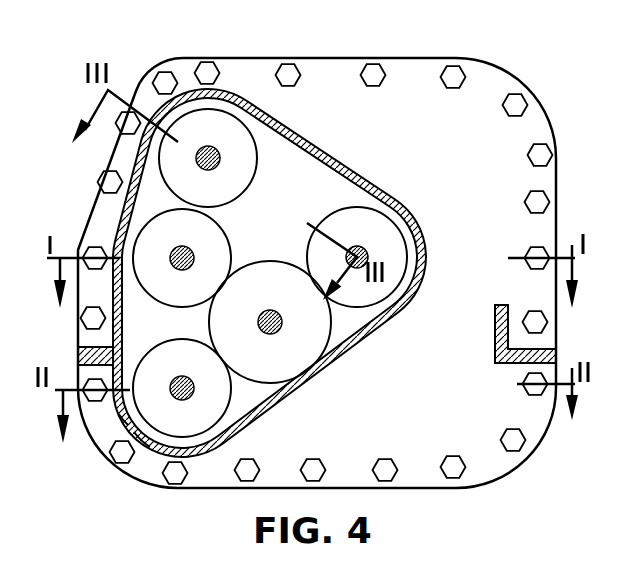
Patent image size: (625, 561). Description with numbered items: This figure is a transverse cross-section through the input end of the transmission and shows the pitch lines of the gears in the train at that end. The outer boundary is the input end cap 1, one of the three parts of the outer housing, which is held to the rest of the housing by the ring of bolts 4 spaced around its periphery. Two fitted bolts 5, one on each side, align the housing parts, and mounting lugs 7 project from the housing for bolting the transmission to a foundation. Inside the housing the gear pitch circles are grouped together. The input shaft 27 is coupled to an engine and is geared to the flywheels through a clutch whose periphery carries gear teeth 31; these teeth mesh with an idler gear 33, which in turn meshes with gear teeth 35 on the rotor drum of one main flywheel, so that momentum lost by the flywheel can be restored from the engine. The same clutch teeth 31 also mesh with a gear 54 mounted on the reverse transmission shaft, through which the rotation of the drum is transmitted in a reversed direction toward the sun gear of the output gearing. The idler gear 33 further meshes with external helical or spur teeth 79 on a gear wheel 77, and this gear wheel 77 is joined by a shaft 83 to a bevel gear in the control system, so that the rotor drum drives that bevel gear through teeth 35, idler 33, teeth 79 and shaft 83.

The input end cap 1 is at (208, 57).
The bolts 4 is at (447, 458).
The fitted bolts 5 is at (90, 250).
The mounting lugs 7 is at (78, 352).
The input shaft 27 is at (194, 251).
The gear teeth on clutch 29 31 is at (118, 288).
The idler gear 33 is at (330, 348).
The gear teeth on rotor drum 23 35 is at (365, 208).
The gear meshing with gear teeth 31 54 is at (254, 176).
The gear wheel 77 is at (145, 442).
The external helical or spur teeth on gear wheel 77 79 is at (127, 418).
The shaft connecting bevel gear 71 and gear wheel 77 83 is at (178, 378).